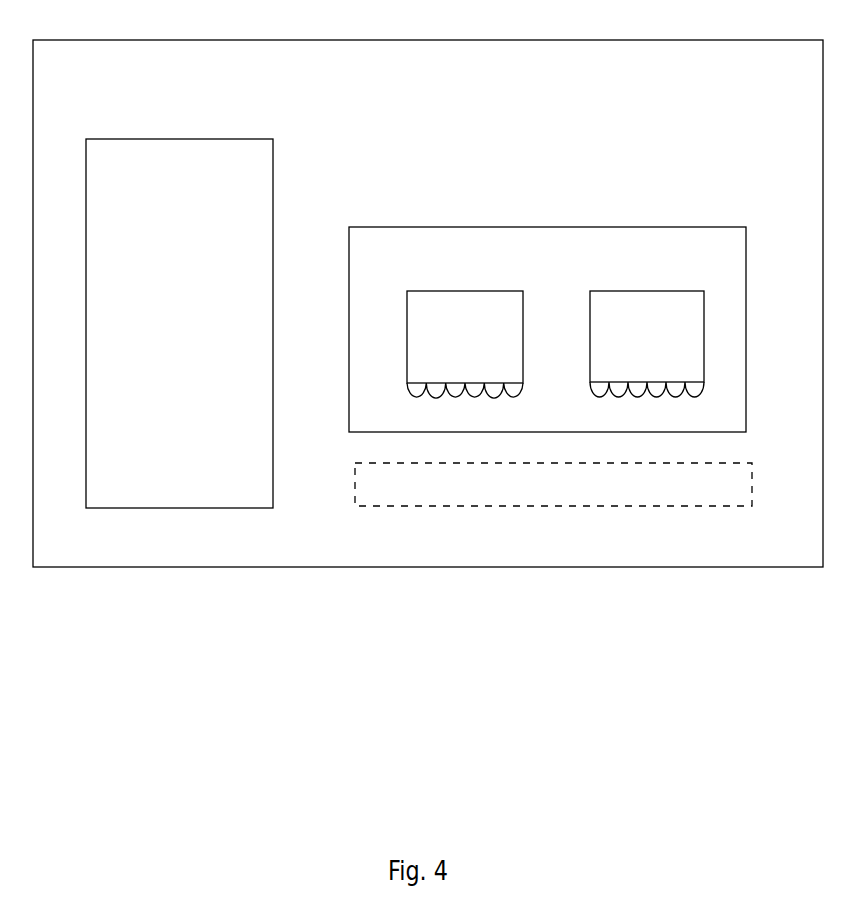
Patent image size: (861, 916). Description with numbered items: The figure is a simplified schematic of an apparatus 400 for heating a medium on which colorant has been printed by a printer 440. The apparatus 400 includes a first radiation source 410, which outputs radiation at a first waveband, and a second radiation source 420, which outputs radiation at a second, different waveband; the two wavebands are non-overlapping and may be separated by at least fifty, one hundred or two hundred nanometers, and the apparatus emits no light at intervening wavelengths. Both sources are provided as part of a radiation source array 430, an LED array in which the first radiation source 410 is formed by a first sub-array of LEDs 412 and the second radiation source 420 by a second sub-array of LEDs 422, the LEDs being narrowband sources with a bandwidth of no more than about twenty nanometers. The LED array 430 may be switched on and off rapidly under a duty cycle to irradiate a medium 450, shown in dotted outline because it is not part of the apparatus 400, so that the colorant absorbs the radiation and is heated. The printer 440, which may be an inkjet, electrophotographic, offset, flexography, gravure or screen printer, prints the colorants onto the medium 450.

The apparatus 400 is at (92, 79).
The first radiation source 410 is at (487, 348).
The first sub-array of LEDs 412 is at (388, 397).
The second radiation source 420 is at (662, 343).
The second sub-array of LEDs 422 is at (713, 393).
The radiation source array 430 is at (408, 269).
The printer 440 is at (201, 338).
The medium 450 is at (420, 500).